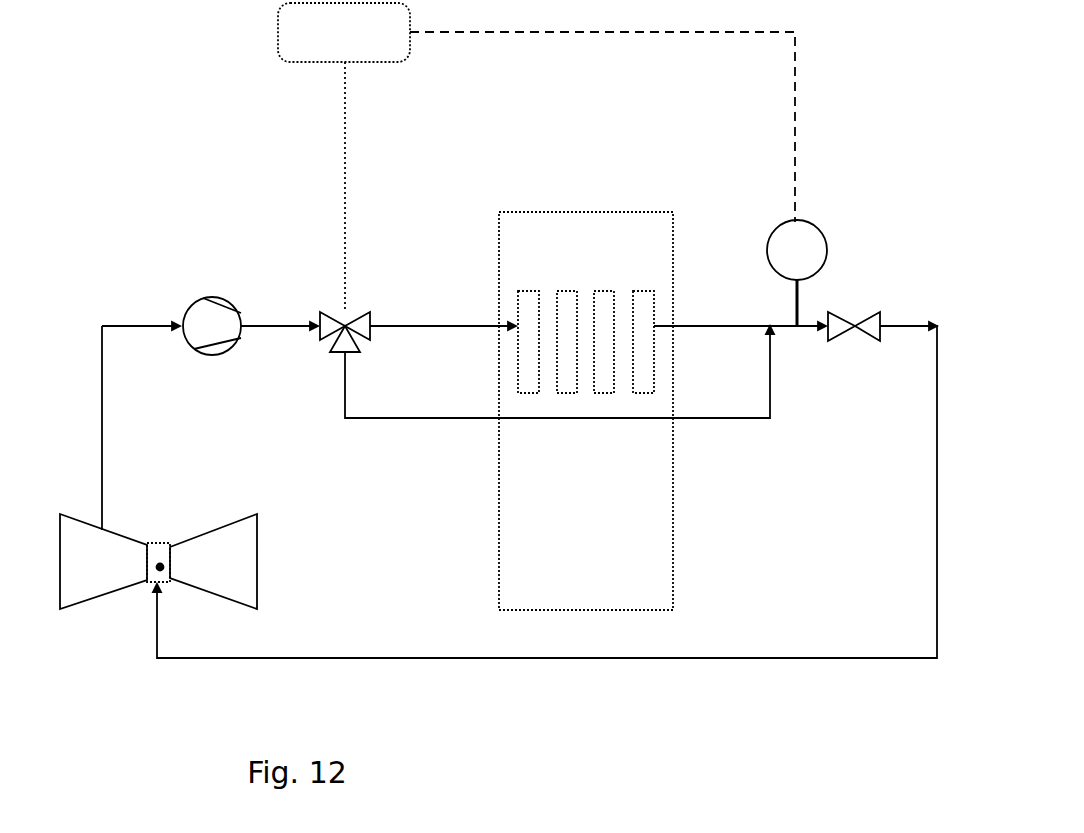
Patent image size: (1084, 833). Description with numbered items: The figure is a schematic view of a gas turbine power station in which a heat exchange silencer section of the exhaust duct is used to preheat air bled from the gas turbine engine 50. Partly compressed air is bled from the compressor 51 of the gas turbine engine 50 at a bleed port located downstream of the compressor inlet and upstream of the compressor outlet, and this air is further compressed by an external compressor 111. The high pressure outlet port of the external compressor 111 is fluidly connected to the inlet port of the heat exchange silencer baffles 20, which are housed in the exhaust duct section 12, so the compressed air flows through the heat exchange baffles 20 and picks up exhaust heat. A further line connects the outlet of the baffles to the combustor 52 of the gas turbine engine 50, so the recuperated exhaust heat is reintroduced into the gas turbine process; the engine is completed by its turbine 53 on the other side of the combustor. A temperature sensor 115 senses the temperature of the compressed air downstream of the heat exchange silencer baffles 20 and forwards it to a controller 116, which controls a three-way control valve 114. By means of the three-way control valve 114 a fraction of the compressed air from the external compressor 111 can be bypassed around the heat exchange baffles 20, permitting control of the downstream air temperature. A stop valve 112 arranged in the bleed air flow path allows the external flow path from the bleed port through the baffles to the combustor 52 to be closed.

The heat exchanger / reactor vessel 12 is at (576, 545).
The heat exchange silencer baffles 20 is at (645, 315).
The gas turbine engine 50 is at (158, 583).
The compressor 51 is at (76, 574).
The combustor 52 is at (160, 567).
The compressor 53 is at (208, 574).
The external compressor 111 is at (205, 297).
The stop valve 112 is at (855, 326).
The three-way control valve 114 is at (345, 326).
The temperature sensor 115 is at (818, 238).
The controller 116 is at (358, 45).